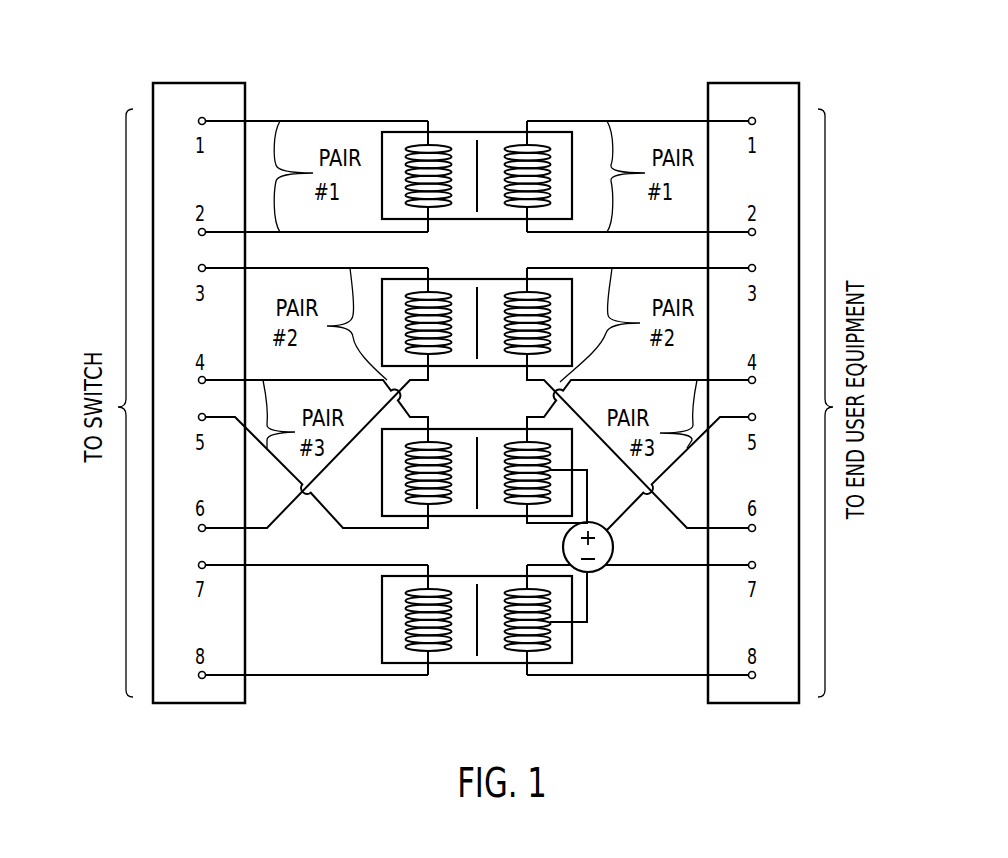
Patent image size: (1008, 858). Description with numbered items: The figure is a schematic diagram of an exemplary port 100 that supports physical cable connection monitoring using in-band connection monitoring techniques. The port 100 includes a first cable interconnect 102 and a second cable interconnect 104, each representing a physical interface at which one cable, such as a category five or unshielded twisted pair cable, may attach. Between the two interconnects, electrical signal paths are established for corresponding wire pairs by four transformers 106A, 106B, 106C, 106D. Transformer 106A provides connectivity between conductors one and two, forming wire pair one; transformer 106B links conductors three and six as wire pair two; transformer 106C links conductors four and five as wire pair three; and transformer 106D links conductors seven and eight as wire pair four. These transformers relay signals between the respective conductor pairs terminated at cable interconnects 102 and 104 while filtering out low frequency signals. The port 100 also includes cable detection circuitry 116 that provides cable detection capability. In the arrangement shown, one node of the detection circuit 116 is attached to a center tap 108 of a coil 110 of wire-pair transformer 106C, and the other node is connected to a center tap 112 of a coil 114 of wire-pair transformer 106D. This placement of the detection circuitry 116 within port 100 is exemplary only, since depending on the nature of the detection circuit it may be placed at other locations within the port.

The port 100 is at (686, 38).
The first cable interconnect 102 is at (202, 83).
The second cable interconnect 104 is at (777, 83).
The transformer 106A is at (452, 132).
The transformer 106B is at (457, 279).
The wire-pair transformer 106C is at (480, 429).
The wire-pair transformer 106D is at (452, 576).
The center tap 108 is at (550, 470).
The coil 110 is at (512, 503).
The center tap 112 is at (550, 625).
The coil 114 is at (508, 648).
The cable detection circuitry 116 is at (613, 546).